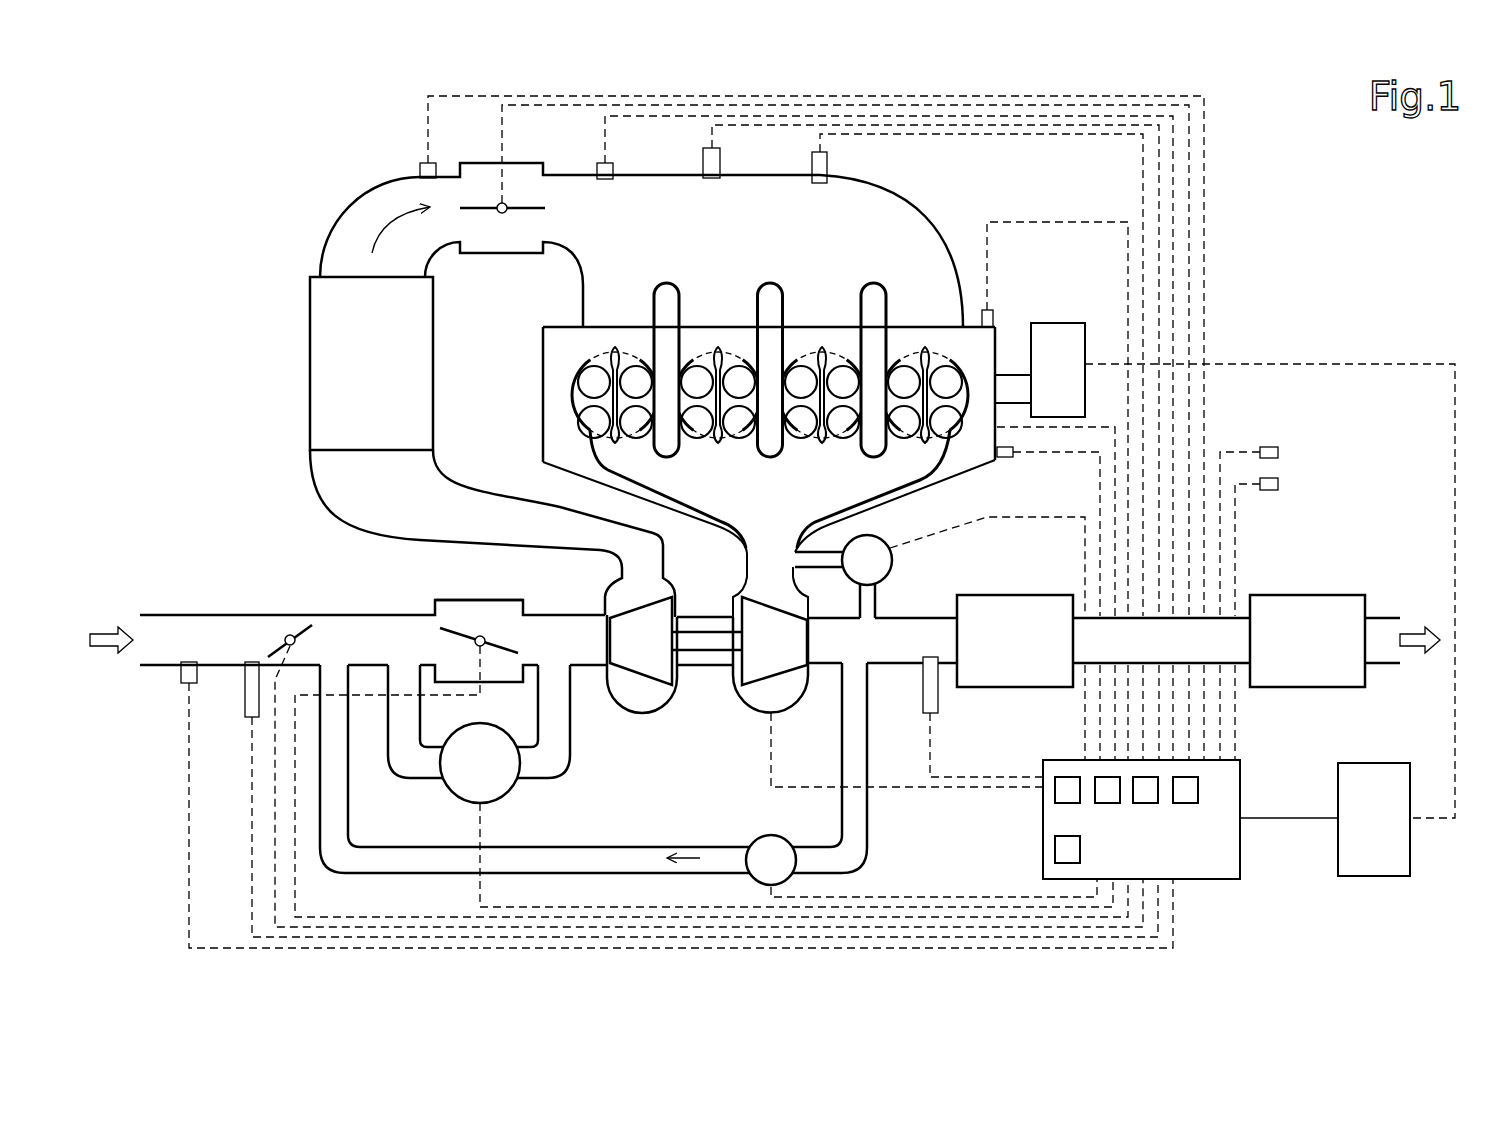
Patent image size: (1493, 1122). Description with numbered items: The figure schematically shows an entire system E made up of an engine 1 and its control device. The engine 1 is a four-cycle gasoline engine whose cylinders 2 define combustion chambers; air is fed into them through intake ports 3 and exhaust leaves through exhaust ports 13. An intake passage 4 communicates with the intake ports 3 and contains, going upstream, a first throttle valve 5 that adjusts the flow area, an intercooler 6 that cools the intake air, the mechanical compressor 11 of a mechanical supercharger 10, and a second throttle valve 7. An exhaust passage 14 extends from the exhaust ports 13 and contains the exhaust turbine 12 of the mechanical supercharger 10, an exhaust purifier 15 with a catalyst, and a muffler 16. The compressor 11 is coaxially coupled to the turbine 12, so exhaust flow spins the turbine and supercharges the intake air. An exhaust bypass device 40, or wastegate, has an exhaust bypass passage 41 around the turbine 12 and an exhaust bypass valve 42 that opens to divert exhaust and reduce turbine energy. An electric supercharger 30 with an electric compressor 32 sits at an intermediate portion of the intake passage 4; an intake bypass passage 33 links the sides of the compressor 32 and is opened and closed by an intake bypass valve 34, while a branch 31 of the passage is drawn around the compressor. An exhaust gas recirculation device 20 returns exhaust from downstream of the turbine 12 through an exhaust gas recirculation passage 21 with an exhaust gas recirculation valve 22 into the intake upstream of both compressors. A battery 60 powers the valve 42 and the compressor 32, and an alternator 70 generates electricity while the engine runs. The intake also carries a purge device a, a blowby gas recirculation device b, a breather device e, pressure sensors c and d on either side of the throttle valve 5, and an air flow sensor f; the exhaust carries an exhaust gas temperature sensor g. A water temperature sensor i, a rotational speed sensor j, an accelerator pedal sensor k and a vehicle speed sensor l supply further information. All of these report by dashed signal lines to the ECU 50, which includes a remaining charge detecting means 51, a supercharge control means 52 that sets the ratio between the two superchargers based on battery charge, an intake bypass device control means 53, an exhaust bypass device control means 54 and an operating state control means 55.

The engine 1 is at (940, 195).
The cylinders 2 is at (725, 347).
The intake ports 3 is at (925, 345).
The intake passage 4 is at (358, 205).
The first throttle valve 5 is at (528, 212).
The intake air cooling device (intercooler) 6 is at (330, 380).
The second throttle valve 7 is at (290, 635).
The mechanical supercharger (turbocharger) 10 is at (715, 688).
The mechanical compressor 11 is at (640, 690).
The exhaust turbine 12 is at (778, 670).
The exhaust ports 13 is at (707, 452).
The exhaust passage 14 is at (895, 665).
The exhaust purifier 15 is at (1025, 597).
The muffler 16 is at (1320, 600).
The exhaust gas recirculation device 20 is at (877, 797).
The exhaust gas recirculation passage 21 is at (855, 838).
The exhaust gas recirculation valve 22 is at (760, 840).
The electric supercharger 30 is at (508, 800).
The bypass passage 31 is at (412, 757).
The electric compressor 32 is at (465, 778).
The intake bypass passage 33 is at (528, 608).
The intake bypass valve 34 is at (460, 630).
The exhaust bypass device (wastegate) 40 is at (897, 565).
The exhaust bypass passage 41 is at (826, 556).
The exhaust bypass valve 42 is at (862, 545).
The electric control unit (ECU) 50 is at (1246, 763).
The remaining charge detecting means 51 is at (1060, 785).
The supercharge control means 52 is at (1098, 785).
The intake bypass device control means 53 is at (1145, 782).
The exhaust bypass device control means 54 is at (1190, 790).
The operating state control means 55 is at (1060, 848).
The battery 60 is at (1375, 862).
The dynamo-electric machine (alternator) 70 is at (1064, 318).
The purge device a is at (812, 168).
The blowby gas recirculation device b is at (703, 165).
The pressure sensor c is at (596, 168).
The pressure sensor d is at (422, 165).
The breather device e is at (246, 680).
The air flow sensor f is at (183, 675).
The exhaust gas temperature sensor g is at (936, 688).
The water temperature sensor i is at (988, 310).
The rotational speed sensor j is at (1007, 460).
The accelerator pedal sensor k is at (1270, 447).
The vehicle speed sensor l is at (1272, 490).
The system E is at (1224, 208).